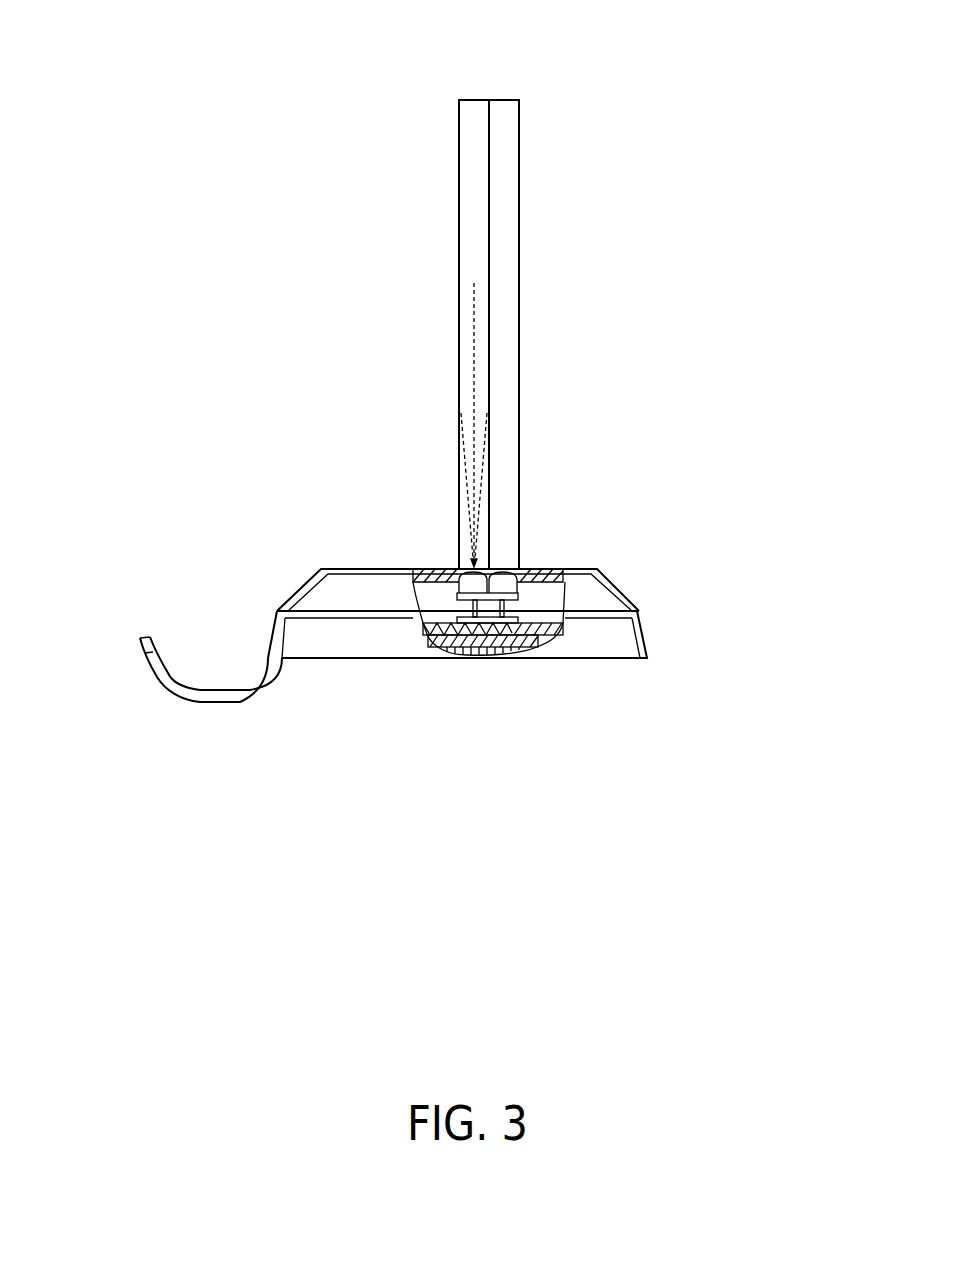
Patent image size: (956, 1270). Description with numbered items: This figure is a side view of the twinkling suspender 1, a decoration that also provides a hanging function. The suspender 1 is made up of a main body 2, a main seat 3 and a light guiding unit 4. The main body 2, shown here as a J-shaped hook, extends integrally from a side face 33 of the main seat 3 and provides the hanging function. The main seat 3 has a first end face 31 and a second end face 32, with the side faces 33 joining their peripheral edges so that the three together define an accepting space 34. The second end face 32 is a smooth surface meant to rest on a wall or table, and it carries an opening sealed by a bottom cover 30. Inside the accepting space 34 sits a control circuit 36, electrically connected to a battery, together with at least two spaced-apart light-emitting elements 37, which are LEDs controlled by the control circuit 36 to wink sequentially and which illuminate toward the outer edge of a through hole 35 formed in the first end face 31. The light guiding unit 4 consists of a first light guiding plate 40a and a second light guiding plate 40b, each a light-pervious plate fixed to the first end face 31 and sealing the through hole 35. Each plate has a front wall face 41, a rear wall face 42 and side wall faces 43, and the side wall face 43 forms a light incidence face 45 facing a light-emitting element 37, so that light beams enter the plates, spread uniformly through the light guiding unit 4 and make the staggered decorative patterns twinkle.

The twinkling suspender 1 is at (238, 99).
The main body 2 is at (214, 698).
The main seat 3 is at (302, 587).
The light guiding unit 4 is at (523, 85).
The bottom cover 30 is at (462, 652).
The first end face 31 is at (525, 574).
The second end face 32 is at (645, 658).
The side faces 33 is at (272, 635).
The accepting space 34 is at (550, 597).
The through hole 35 is at (432, 630).
The control circuit 36 is at (523, 616).
The light-emitting elements 37 is at (492, 570).
The first light guiding plate 40a is at (460, 133).
The second light guiding plate 40b is at (507, 142).
The front wall face 41 is at (458, 200).
The rear wall face 42 is at (519, 247).
The side wall faces 43 is at (505, 182).
The light incidence face 45 is at (452, 578).